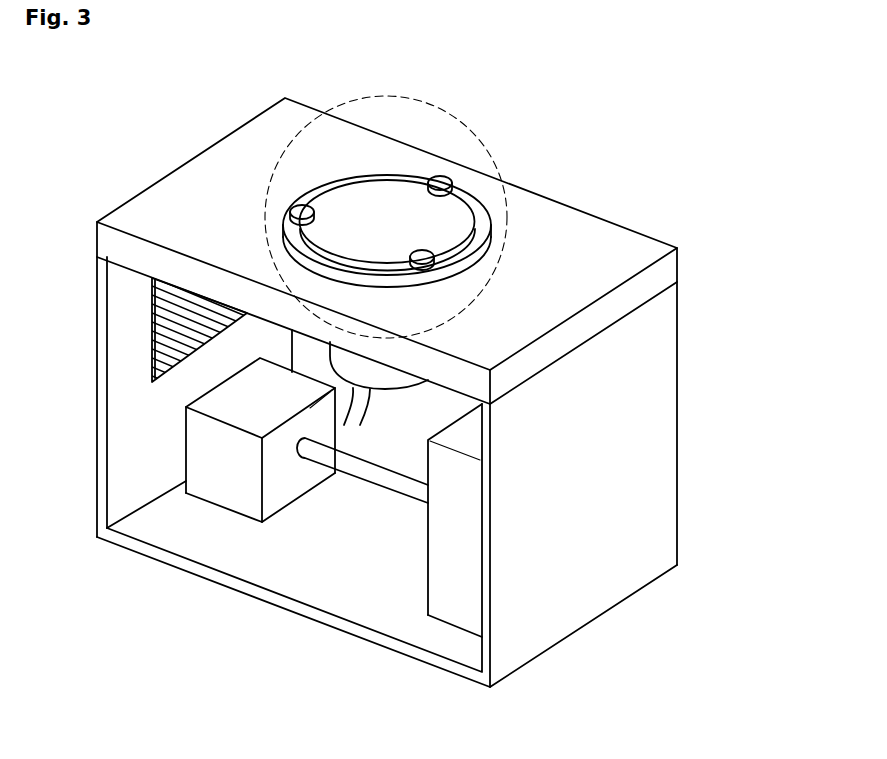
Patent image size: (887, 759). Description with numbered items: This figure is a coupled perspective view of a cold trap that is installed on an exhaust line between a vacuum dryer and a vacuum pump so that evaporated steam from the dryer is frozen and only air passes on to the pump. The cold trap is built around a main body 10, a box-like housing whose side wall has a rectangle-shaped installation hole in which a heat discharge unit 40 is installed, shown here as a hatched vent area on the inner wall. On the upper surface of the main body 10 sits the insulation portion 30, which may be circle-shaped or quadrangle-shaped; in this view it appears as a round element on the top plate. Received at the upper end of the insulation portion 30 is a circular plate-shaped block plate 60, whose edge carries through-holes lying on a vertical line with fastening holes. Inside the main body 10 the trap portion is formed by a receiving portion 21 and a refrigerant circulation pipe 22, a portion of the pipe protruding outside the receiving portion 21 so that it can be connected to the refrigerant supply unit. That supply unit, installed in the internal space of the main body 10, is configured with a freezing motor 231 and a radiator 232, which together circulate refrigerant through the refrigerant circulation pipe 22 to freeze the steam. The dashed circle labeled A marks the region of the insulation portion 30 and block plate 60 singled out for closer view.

The main body 10 is at (637, 399).
The receiving portion 21 is at (387, 378).
The refrigerant circulation pipe 22 is at (351, 384).
The insulation portion 30 is at (480, 213).
The heat discharge unit 40 is at (137, 326).
The block plate 60 is at (357, 198).
The freezing motor 231 is at (223, 480).
The radiator 232 is at (447, 580).
The detail region A is at (448, 118).